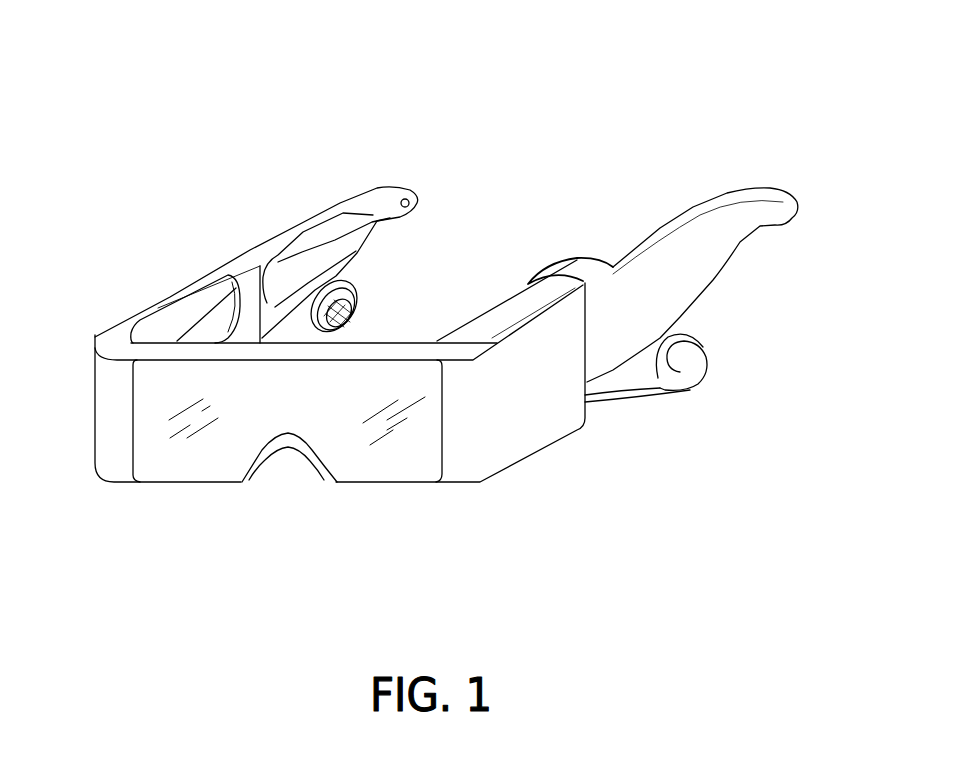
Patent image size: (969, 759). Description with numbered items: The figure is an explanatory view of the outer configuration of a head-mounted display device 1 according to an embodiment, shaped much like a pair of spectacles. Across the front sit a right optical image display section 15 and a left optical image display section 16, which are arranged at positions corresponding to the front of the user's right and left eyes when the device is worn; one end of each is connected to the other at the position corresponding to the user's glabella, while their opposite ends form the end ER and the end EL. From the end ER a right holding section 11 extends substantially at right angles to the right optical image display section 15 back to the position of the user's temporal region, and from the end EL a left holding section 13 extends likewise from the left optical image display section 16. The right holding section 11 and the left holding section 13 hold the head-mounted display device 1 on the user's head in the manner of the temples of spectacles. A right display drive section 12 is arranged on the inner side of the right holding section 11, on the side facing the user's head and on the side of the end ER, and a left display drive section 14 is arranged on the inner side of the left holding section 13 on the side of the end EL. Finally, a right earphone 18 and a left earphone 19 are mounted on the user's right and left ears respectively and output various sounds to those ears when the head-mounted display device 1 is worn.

The head-mounted display device 1 is at (658, 68).
The right holding section 11 is at (334, 188).
The right display drive section 12 is at (178, 317).
The left holding section 13 is at (727, 183).
The left display drive section 14 is at (502, 317).
The right optical image display section 15 is at (187, 463).
The left optical image display section 16 is at (380, 466).
The right earphone 18 is at (353, 284).
The left earphone 19 is at (712, 352).